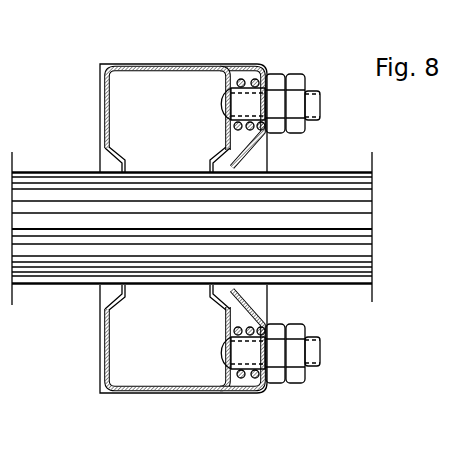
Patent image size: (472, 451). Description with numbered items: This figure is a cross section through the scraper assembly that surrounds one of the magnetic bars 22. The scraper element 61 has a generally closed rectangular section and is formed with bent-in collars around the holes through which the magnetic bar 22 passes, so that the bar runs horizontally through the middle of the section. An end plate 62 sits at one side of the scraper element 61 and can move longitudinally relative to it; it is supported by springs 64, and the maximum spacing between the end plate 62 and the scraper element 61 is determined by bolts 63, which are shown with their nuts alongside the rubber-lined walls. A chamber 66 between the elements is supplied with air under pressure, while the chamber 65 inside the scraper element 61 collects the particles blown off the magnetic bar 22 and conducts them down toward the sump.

The magnetic bar 22 is at (63, 183).
The scraper element 61 is at (100, 341).
The end plate 62 is at (246, 62).
The bolt 63 is at (313, 350).
The spring 64 is at (240, 380).
The chamber 65 is at (178, 346).
The chamber 66 is at (247, 313).